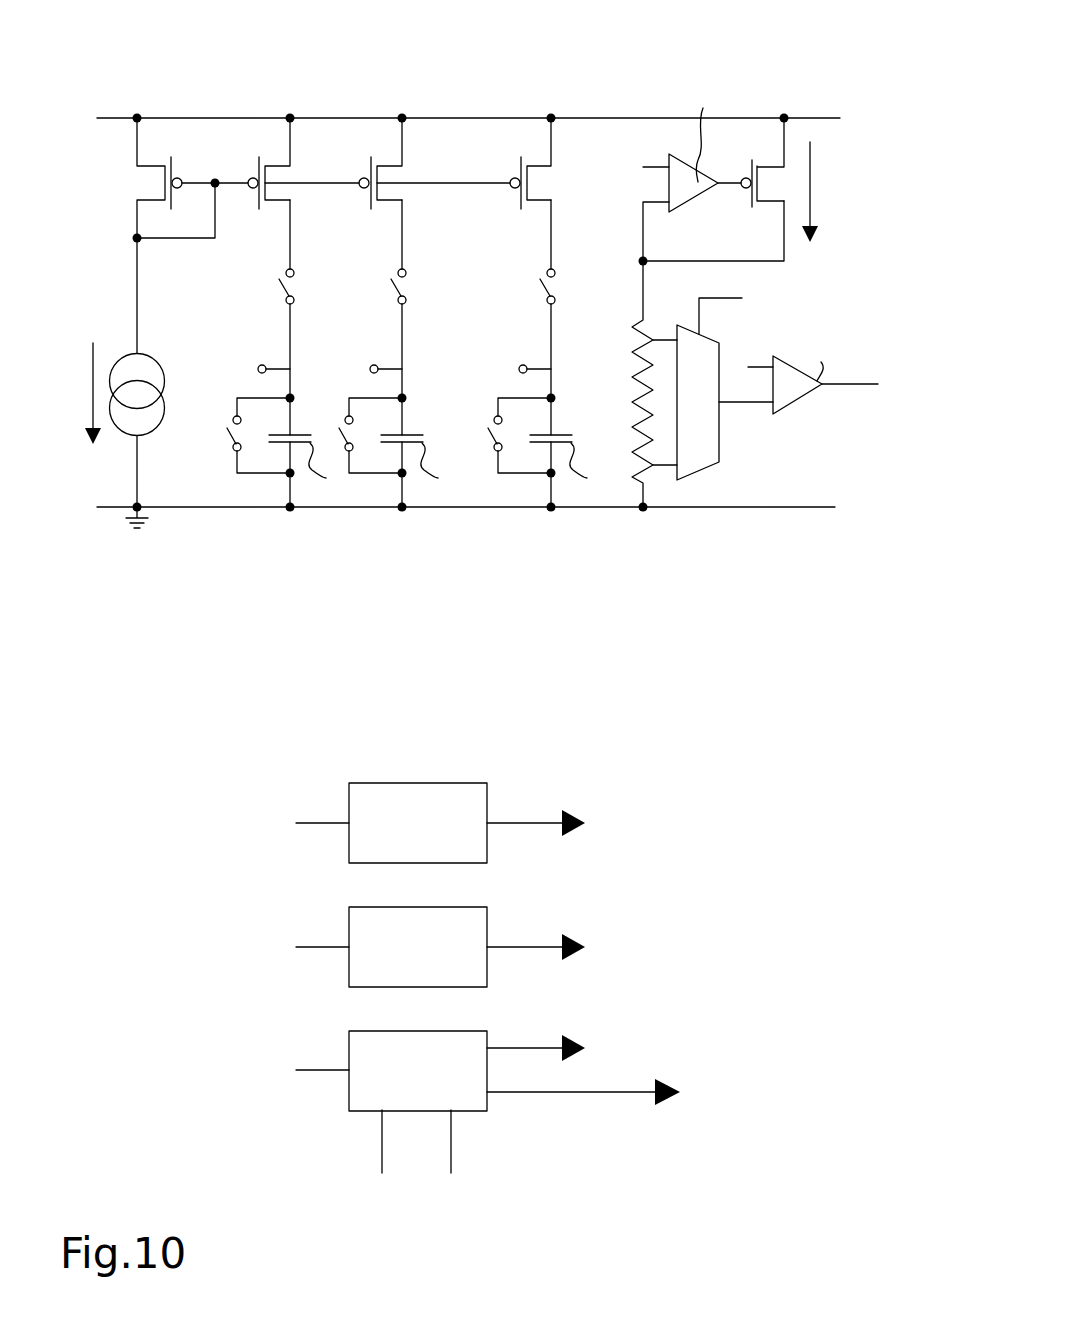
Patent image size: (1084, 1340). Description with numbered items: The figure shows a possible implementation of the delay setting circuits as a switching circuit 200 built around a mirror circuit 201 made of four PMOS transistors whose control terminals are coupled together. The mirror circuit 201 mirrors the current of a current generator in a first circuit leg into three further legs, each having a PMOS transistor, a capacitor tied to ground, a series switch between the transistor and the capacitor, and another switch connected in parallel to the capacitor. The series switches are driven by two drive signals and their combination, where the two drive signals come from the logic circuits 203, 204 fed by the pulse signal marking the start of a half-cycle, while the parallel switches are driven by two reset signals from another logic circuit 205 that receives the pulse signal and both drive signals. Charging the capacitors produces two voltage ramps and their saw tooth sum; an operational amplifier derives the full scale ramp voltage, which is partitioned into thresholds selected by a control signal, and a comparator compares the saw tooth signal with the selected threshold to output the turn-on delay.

The switching circuit 200 is at (452, 105).
The mirror circuit 201 is at (197, 155).
The logic circuit 203 is at (466, 810).
The logic circuit 204 is at (473, 943).
The logic circuit 205 is at (695, 448).